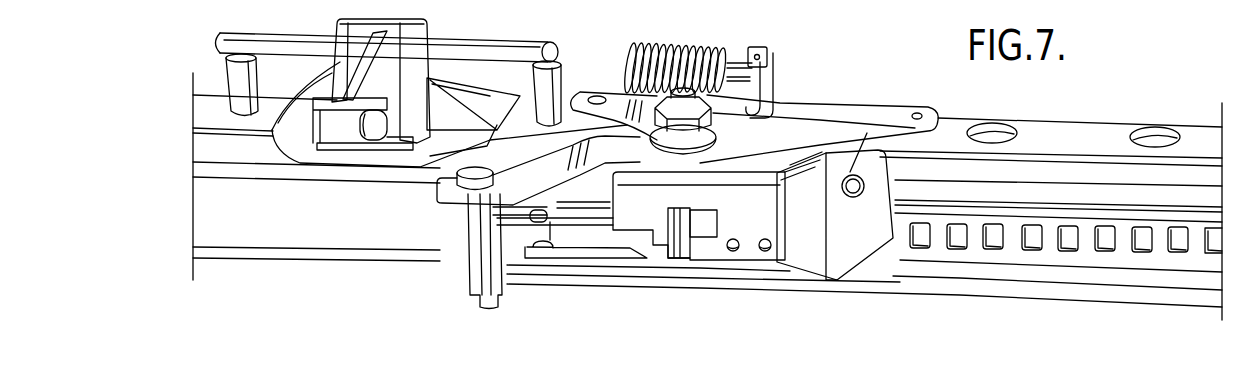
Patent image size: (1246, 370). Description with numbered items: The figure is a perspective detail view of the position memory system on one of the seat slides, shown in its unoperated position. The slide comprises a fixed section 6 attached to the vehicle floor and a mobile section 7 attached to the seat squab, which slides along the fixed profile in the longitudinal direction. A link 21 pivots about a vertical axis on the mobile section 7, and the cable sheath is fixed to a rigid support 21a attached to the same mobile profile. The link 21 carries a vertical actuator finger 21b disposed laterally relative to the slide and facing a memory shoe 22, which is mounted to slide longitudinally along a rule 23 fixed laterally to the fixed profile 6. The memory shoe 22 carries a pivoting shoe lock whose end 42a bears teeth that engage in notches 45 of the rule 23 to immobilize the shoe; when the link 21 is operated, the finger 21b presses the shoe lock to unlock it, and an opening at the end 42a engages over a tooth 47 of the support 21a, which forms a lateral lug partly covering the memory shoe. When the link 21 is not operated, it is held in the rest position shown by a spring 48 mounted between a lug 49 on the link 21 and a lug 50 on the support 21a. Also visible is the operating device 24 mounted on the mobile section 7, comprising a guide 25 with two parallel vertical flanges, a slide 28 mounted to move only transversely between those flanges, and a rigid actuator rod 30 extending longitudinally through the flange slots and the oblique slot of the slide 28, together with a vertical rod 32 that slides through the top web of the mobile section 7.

The fixed section 6 is at (251, 218).
The mobile section 7 is at (1127, 130).
The link 21 is at (888, 110).
The rigid support 21a is at (848, 245).
The vertical actuator finger 21b is at (480, 243).
The memory shoe 22 is at (593, 253).
The rule 23 is at (1147, 283).
The operating device 24 is at (516, 33).
The guide 25 is at (292, 125).
The slide 28 is at (398, 50).
The rigid actuator rod 30 is at (535, 50).
The vertical rod 32 is at (237, 72).
The end of the shoe lock 42a is at (680, 255).
The notches 45 is at (1032, 250).
The tooth 47 is at (667, 238).
The spring 48 is at (690, 62).
The lug 49 is at (760, 57).
The lug 50 is at (587, 97).